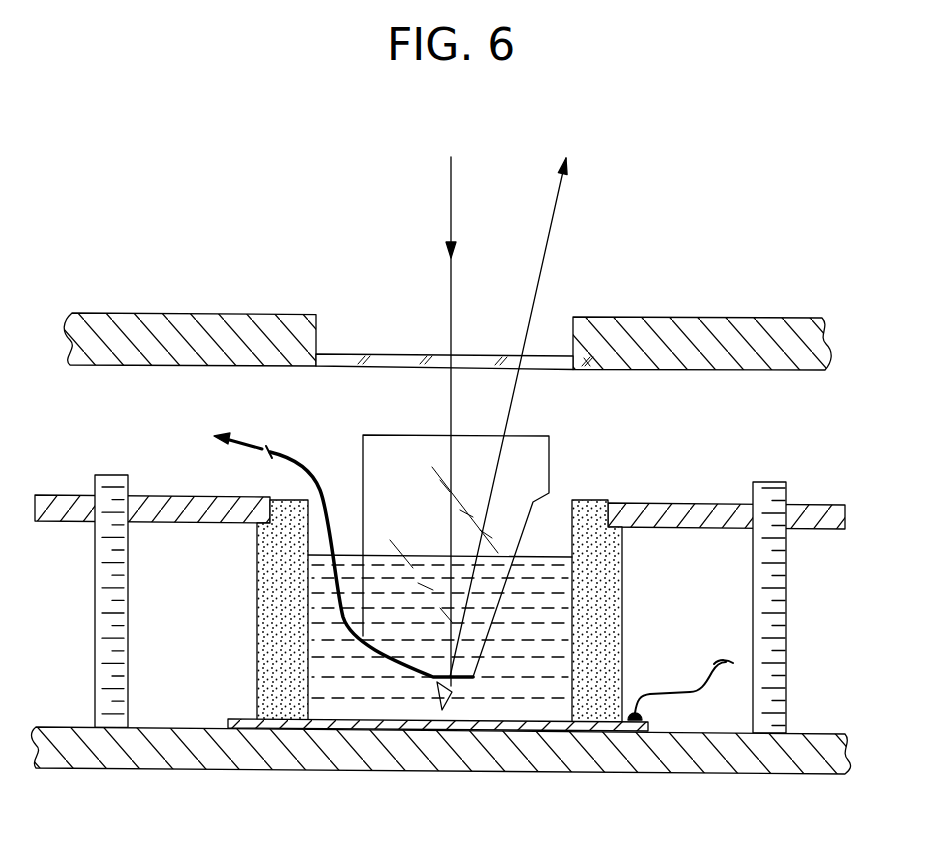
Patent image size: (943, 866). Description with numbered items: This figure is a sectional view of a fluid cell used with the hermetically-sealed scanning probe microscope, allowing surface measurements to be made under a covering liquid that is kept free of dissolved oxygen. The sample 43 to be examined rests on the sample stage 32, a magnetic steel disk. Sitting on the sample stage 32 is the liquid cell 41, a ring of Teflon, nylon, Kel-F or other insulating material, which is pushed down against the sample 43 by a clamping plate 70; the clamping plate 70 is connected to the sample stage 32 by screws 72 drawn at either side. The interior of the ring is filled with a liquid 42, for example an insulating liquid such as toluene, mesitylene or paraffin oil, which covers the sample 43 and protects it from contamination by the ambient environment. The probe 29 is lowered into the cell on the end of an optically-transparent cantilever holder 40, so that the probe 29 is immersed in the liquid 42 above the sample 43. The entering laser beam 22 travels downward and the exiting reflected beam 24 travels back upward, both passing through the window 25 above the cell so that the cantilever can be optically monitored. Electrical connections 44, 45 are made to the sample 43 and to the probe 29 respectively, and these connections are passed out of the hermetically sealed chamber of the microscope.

The beam 22 is at (450, 222).
The reflected beam 24 is at (560, 193).
The window 25 is at (489, 357).
The probe 29 is at (435, 683).
The sample stage 32 is at (682, 752).
The cantilever holder 40 is at (405, 450).
The liquid cell 41 is at (257, 670).
The liquid 42 is at (372, 692).
The sample 43 is at (492, 728).
The electrical connection 44 is at (697, 690).
The electrical connection 45 is at (300, 462).
The clamping plate 70 is at (707, 503).
The screws 72 is at (93, 625).